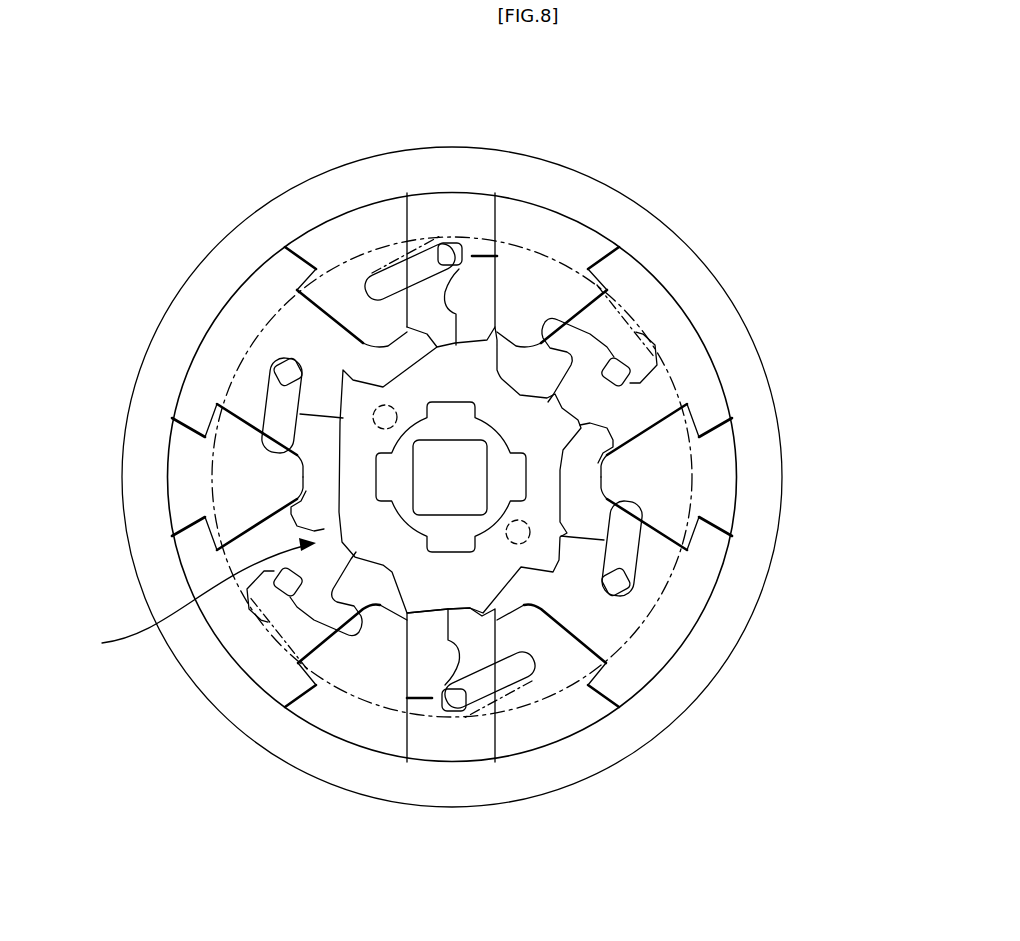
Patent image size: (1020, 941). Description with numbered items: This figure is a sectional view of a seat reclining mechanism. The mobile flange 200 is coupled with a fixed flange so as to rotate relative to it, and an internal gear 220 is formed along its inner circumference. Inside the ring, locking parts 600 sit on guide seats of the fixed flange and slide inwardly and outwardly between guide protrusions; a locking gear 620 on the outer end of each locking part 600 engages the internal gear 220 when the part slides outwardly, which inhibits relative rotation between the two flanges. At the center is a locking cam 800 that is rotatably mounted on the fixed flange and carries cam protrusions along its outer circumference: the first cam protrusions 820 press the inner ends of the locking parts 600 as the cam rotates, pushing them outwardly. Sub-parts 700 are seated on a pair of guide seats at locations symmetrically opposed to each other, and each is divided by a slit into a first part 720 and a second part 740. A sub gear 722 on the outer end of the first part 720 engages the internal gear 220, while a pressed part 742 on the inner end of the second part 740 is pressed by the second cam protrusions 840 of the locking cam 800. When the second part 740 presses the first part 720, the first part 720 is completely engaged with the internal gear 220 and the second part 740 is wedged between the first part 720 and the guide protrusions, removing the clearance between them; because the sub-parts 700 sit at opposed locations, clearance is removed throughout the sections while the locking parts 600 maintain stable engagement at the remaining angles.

The mobile flange 200 is at (597, 200).
The internal gear 220 is at (578, 212).
The locking part 600 is at (637, 347).
The locking gear 620 is at (677, 293).
The sub-part 700 is at (438, 210).
The first part 720 is at (460, 743).
The sub gear 722 is at (433, 764).
The second part 740 is at (422, 660).
The pressed part 742 is at (405, 600).
The locking cam 800 is at (181, 599).
The first cam protrusion 820 is at (553, 422).
The second cam protrusion 840 is at (453, 588).